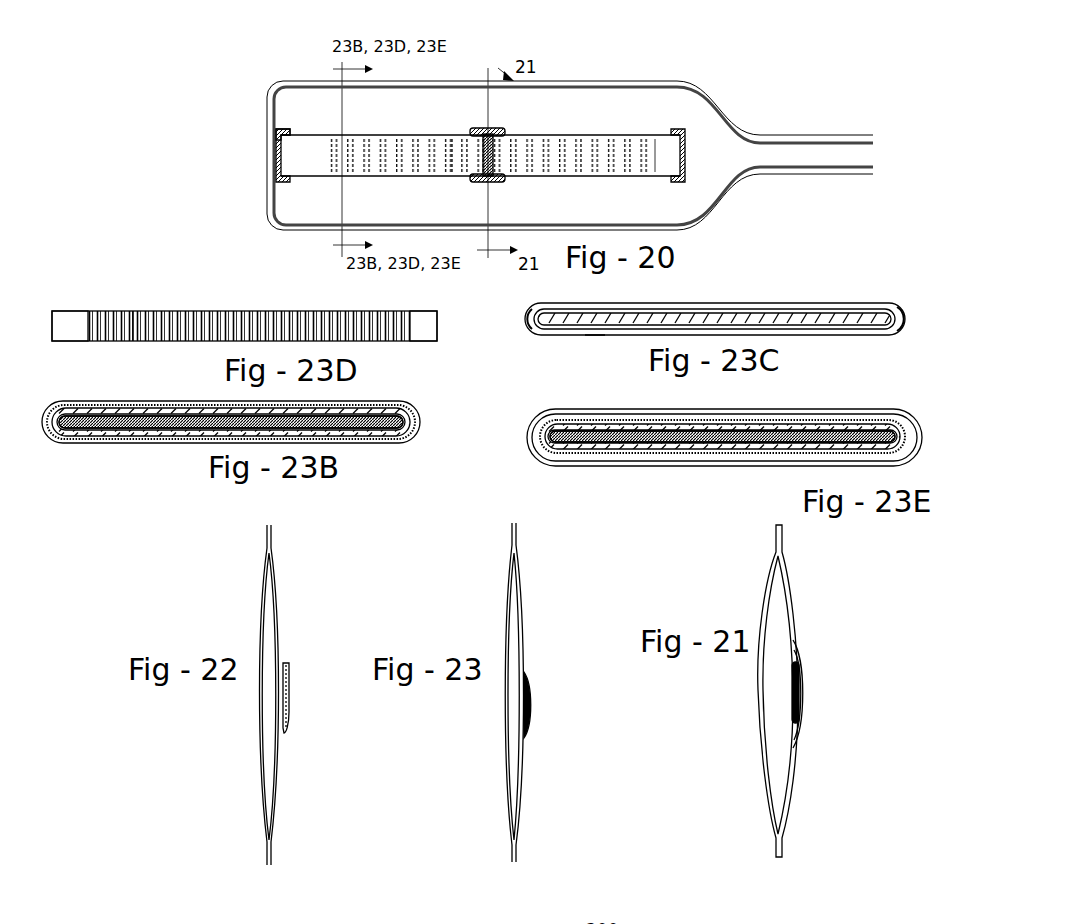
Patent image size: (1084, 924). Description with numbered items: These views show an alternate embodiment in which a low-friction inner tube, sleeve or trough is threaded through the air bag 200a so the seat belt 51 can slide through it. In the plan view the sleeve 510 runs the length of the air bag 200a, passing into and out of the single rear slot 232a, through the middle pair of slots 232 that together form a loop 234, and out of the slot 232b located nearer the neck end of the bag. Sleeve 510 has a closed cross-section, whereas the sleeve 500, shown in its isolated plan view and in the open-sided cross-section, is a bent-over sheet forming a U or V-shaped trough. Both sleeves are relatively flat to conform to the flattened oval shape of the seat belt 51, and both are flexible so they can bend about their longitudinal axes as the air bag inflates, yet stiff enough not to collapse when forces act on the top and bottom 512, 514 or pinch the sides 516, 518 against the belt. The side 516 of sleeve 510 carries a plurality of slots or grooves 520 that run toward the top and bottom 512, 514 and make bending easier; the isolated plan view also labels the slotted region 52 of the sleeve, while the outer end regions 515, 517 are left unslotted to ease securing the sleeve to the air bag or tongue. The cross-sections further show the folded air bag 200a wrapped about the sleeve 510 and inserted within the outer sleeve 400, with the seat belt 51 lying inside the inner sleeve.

In FIG. 20, the air bag 200a is at (590, 70).
In FIG. 23B, the air bag 200a is at (80, 445).
In FIG. 23E, the air bag 200a is at (558, 463).
In FIG. 22, the air bag 200a is at (262, 604).
In FIG. 21, the air bag 200a is at (762, 590).
In FIG. 20, the inner tube, sleeve or trough 510 is at (421, 136).
In FIG. 23D, the inner tube, sleeve or trough 510 is at (105, 309).
In FIG. 23B, the inner tube, sleeve or trough 510 is at (370, 412).
In FIG. 23C, the inner tube, sleeve or trough 510 is at (800, 304).
In FIG. 23E, the inner tube, sleeve or trough 510 is at (786, 421).
In FIG. 23, the inner tube, sleeve or trough 510 is at (532, 682).
In FIG. 21, the inner tube, sleeve or trough 510 is at (797, 661).
In FIG. 20, the bottom side of sleeve 514 is at (368, 138).
In FIG. 23C, the bottom side of sleeve 514 is at (529, 317).
In FIG. 20, the slots or grooves 520 is at (418, 145).
In FIG. 20, the outer end region 515 is at (293, 157).
In FIG. 23D, the outer end region 515 is at (67, 335).
In FIG. 20, the slot 232a is at (281, 127).
In FIG. 20, the slots or slits 232 is at (475, 130).
In FIG. 20, the loop 234 is at (491, 130).
In FIG. 20, the outer end region 517 is at (653, 140).
In FIG. 23D, the outer end region 517 is at (425, 335).
In FIG. 20, the slot 232b is at (674, 130).
In FIG. 23D, the side of sleeve 516 is at (61, 298).
In FIG. 23C, the side of sleeve 516 is at (669, 301).
In FIG. 23D, the ribs 52 is at (136, 322).
In FIG. 23B, the seat belt 51 is at (378, 438).
In FIG. 23C, the seat belt 51 is at (833, 314).
In FIG. 23E, the seat belt 51 is at (831, 433).
In FIG. 22, the seat belt 51 is at (288, 668).
In FIG. 21, the seat belt 51 is at (801, 691).
In FIG. 23C, the top side of sleeve 512 is at (905, 312).
In FIG. 23C, the side of sleeve 518 is at (590, 337).
In FIG. 23E, the outer sleeve 400 is at (582, 412).
In FIG. 22, the inner tube, sleeve or trough 500 is at (291, 681).